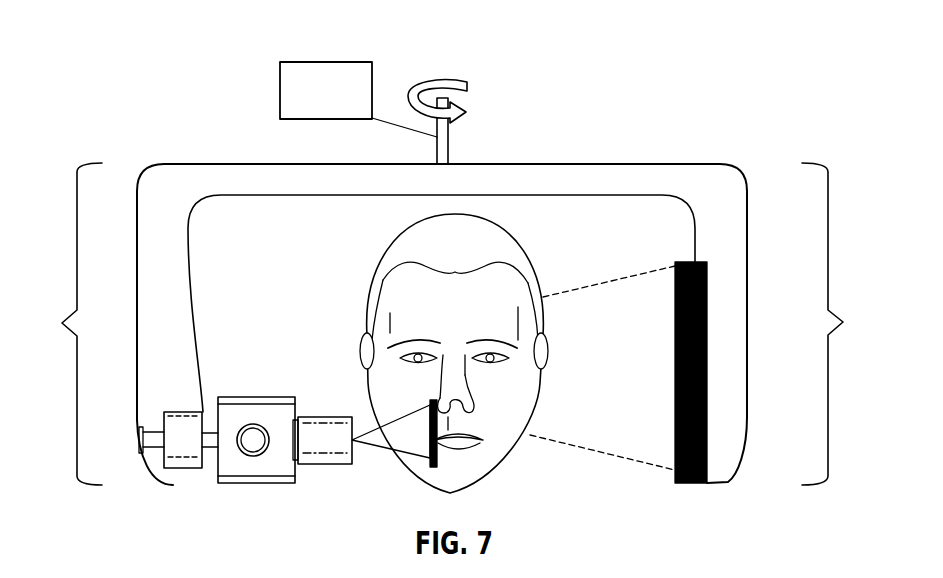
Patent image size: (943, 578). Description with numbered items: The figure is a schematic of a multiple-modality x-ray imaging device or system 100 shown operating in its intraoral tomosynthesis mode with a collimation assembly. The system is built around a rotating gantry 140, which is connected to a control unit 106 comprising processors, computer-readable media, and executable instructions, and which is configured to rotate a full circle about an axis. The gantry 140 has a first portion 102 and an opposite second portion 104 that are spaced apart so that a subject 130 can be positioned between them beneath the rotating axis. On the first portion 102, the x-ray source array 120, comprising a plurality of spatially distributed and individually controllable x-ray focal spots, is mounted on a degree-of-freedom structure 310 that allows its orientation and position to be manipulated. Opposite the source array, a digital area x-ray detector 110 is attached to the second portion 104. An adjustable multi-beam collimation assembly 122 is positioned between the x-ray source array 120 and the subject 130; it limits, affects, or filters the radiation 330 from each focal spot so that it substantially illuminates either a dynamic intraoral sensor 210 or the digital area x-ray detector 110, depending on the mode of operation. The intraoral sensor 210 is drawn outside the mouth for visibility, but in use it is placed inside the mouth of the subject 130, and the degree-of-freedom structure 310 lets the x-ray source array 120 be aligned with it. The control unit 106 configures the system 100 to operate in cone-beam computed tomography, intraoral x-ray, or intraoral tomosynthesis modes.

The x-ray imaging device or system 100 is at (452, 288).
The first portion 102 is at (64, 324).
The second portion 104 is at (840, 324).
The control unit 106 is at (280, 90).
The digital area x-ray detector 110 is at (707, 425).
The x-ray source array 120 is at (243, 412).
The collimation assembly 122 is at (313, 430).
The subject 130 is at (367, 297).
The rotating gantry 140 is at (378, 164).
The dynamic intraoral sensor 210 is at (441, 418).
The degree-of-freedom structure 310 is at (185, 463).
The radiation 330 is at (385, 440).